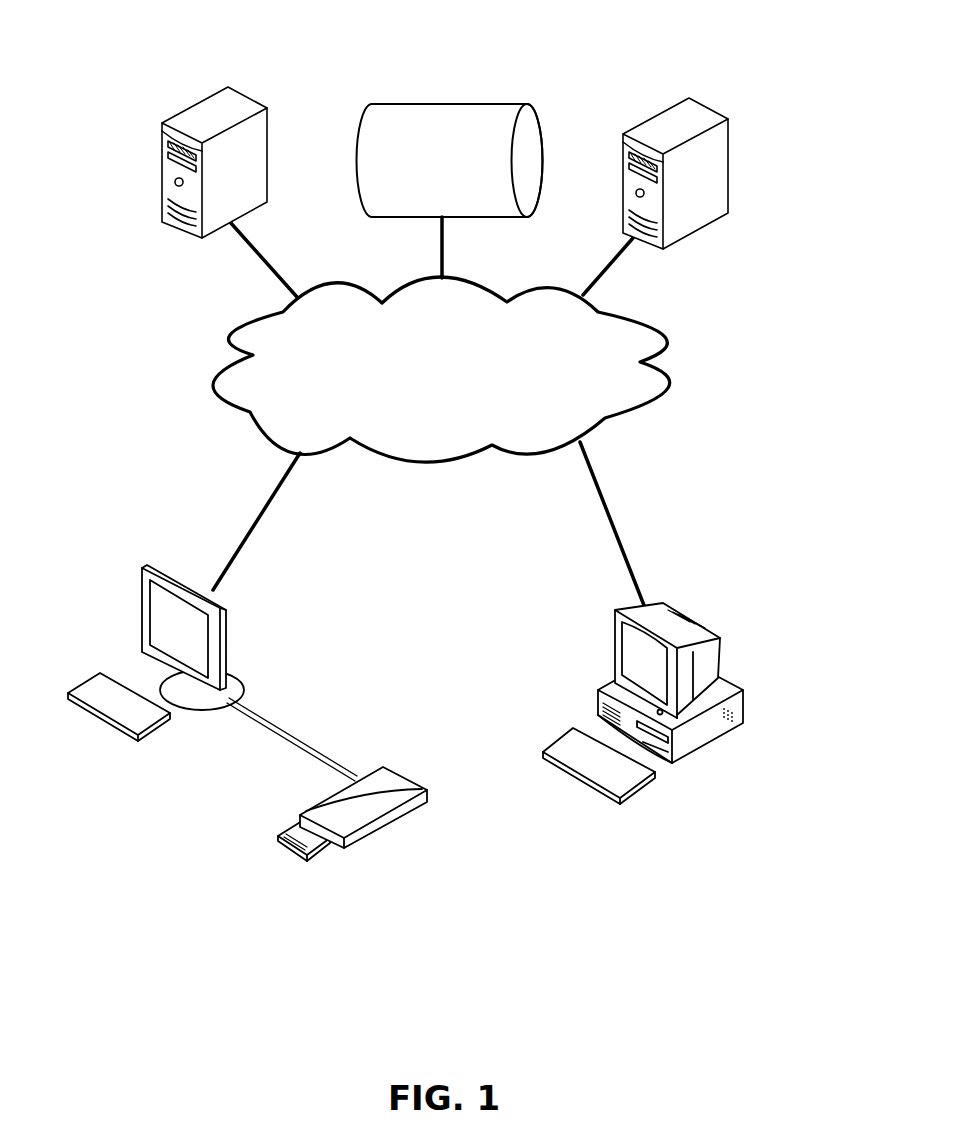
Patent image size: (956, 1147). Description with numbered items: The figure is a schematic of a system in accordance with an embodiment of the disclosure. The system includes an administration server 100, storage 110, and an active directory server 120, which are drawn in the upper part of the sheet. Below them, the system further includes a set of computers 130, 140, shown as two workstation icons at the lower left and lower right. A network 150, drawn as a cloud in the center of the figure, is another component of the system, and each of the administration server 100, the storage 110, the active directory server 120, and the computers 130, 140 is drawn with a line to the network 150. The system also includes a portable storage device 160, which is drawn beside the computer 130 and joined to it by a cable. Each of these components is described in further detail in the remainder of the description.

The administration server 100 is at (224, 134).
The storage 110 is at (450, 160).
The active directory server 120 is at (683, 130).
The computer 130 is at (212, 673).
The computer 140 is at (681, 703).
The network 150 is at (441, 369).
The portable storage device 160 is at (367, 862).